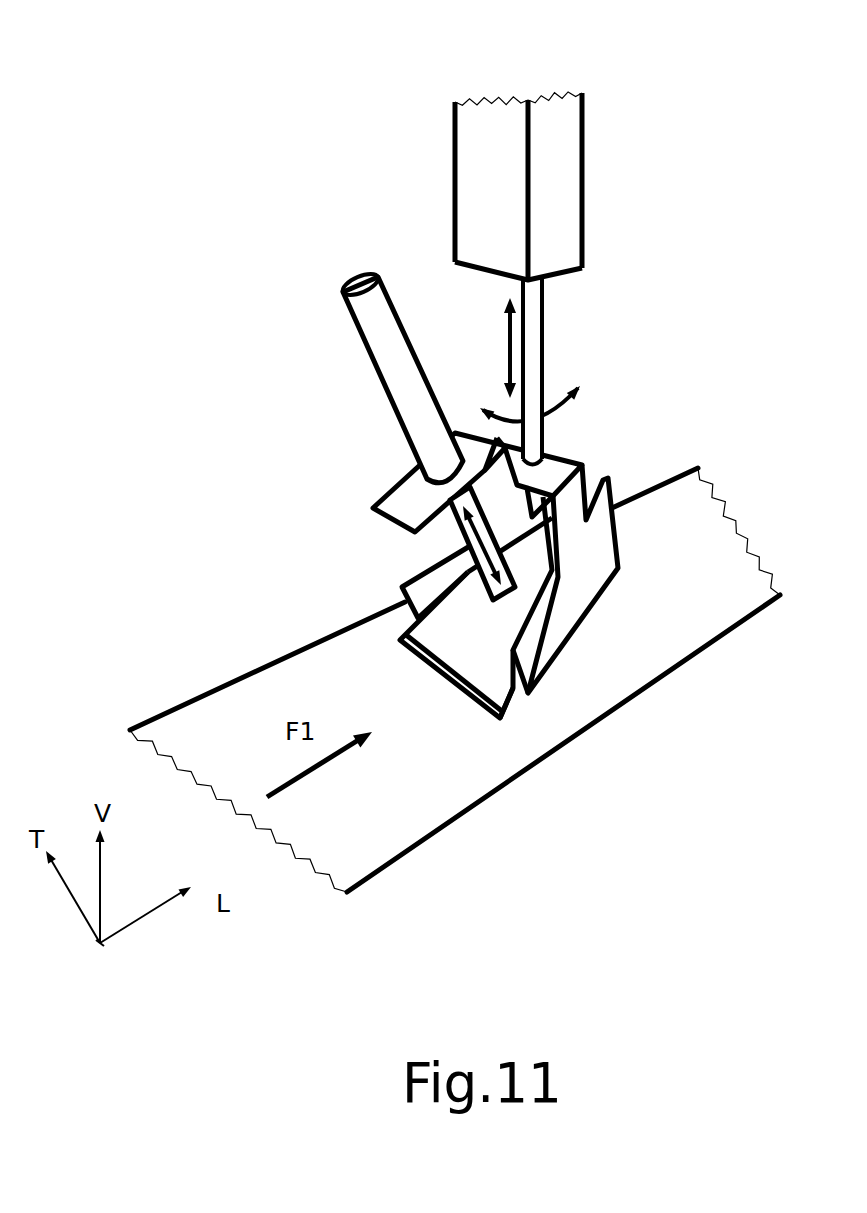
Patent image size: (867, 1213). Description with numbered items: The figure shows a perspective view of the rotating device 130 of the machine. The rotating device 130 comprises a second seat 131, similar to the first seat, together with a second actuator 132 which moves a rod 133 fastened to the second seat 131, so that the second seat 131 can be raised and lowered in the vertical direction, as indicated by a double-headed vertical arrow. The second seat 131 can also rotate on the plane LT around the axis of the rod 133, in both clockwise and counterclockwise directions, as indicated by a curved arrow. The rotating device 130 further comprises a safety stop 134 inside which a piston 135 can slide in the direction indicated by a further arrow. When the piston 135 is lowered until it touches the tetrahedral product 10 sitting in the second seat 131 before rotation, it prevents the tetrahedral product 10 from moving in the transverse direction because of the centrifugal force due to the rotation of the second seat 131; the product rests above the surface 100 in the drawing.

The rotating device 130 is at (430, 350).
The second seat 131 is at (609, 564).
The second actuator 132 is at (513, 172).
The rod 133 is at (545, 335).
The safety stop 134 is at (392, 358).
The piston 135 is at (457, 530).
The tetrahedral product 10 is at (489, 644).
The base 100 is at (713, 558).